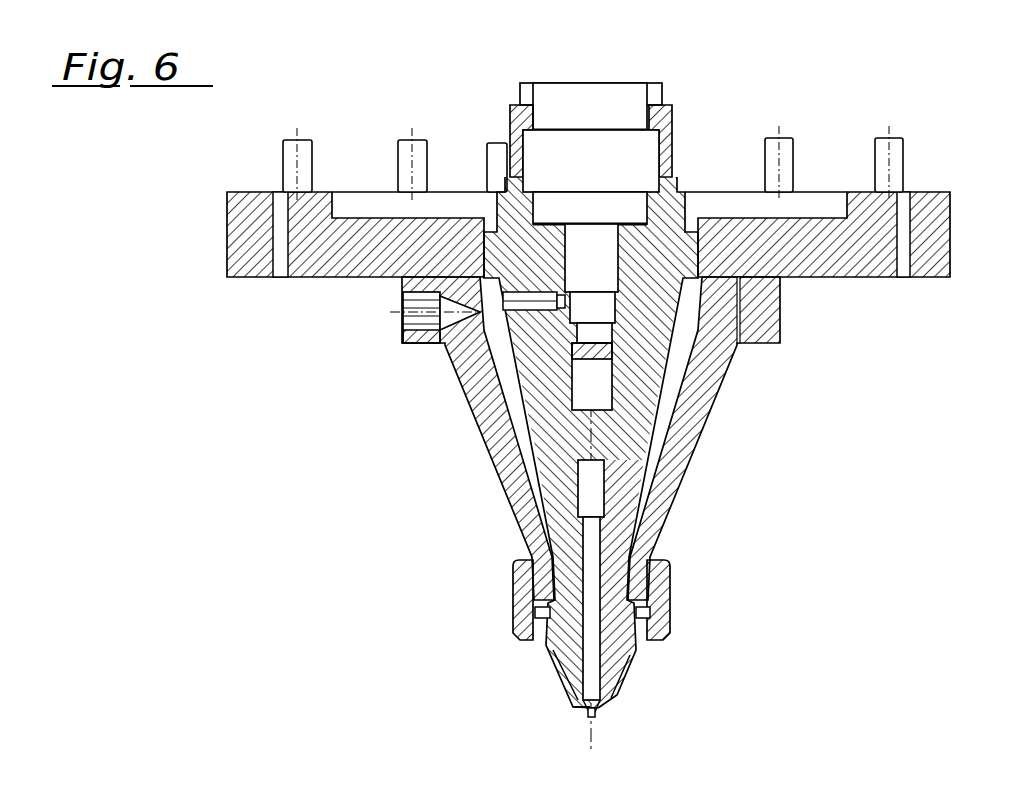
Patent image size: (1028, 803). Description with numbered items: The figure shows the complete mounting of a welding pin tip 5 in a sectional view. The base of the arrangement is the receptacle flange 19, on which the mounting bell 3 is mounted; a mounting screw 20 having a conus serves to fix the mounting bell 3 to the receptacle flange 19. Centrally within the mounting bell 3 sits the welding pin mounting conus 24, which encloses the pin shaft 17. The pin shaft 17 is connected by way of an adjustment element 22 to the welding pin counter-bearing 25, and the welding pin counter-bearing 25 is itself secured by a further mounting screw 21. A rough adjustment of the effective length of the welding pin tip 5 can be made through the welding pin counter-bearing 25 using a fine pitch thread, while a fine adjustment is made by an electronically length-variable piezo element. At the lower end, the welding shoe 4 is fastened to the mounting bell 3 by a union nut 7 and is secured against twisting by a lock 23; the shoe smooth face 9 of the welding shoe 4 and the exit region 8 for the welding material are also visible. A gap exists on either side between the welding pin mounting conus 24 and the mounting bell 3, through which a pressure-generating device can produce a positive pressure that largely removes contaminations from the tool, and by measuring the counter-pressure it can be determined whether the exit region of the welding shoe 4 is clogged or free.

The mounting bell 3 is at (690, 480).
The welding shoe 4 is at (637, 652).
The welding pin tip 5 is at (583, 712).
The union nut 7 is at (670, 583).
The exit region 8 is at (563, 677).
The shoe smooth face 9 is at (598, 712).
The pin shaft 17 is at (640, 612).
The receptacle flange 19 is at (950, 244).
The mounting screw 20 is at (403, 317).
The mounting screw 21 is at (547, 308).
The adjustment element 22 is at (578, 398).
The lock 23 is at (540, 611).
The welding pin mounting conus 24 is at (645, 443).
The welding pin counter-bearing 25 is at (610, 273).